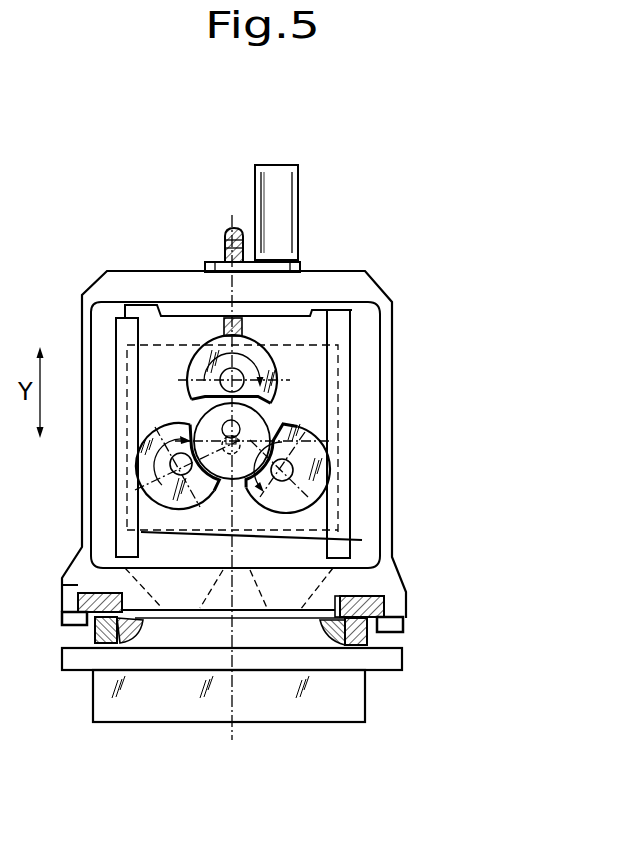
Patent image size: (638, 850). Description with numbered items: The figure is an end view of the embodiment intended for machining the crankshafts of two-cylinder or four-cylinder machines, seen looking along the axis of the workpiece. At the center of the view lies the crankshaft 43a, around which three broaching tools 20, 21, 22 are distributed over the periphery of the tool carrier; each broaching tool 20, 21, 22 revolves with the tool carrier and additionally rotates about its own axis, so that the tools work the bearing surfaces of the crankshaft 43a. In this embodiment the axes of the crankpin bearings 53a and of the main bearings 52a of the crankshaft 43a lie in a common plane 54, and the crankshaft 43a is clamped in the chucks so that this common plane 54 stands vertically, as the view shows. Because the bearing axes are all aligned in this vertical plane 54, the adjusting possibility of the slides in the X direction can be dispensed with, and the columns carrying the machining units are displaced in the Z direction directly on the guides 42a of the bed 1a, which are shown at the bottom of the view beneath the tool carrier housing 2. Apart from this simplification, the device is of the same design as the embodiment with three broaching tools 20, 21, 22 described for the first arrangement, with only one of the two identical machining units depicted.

The bed 1a is at (148, 695).
The roller head housing 2 is at (147, 226).
The broaching tool 20 is at (252, 362).
The broaching tool 21 is at (318, 476).
The broaching tool 22 is at (176, 456).
The guides 42a is at (405, 610).
The crankshaft 43a is at (247, 435).
The main bearings 52a is at (244, 447).
The crankpin bearings 53a is at (250, 428).
The common plane 54 is at (360, 540).